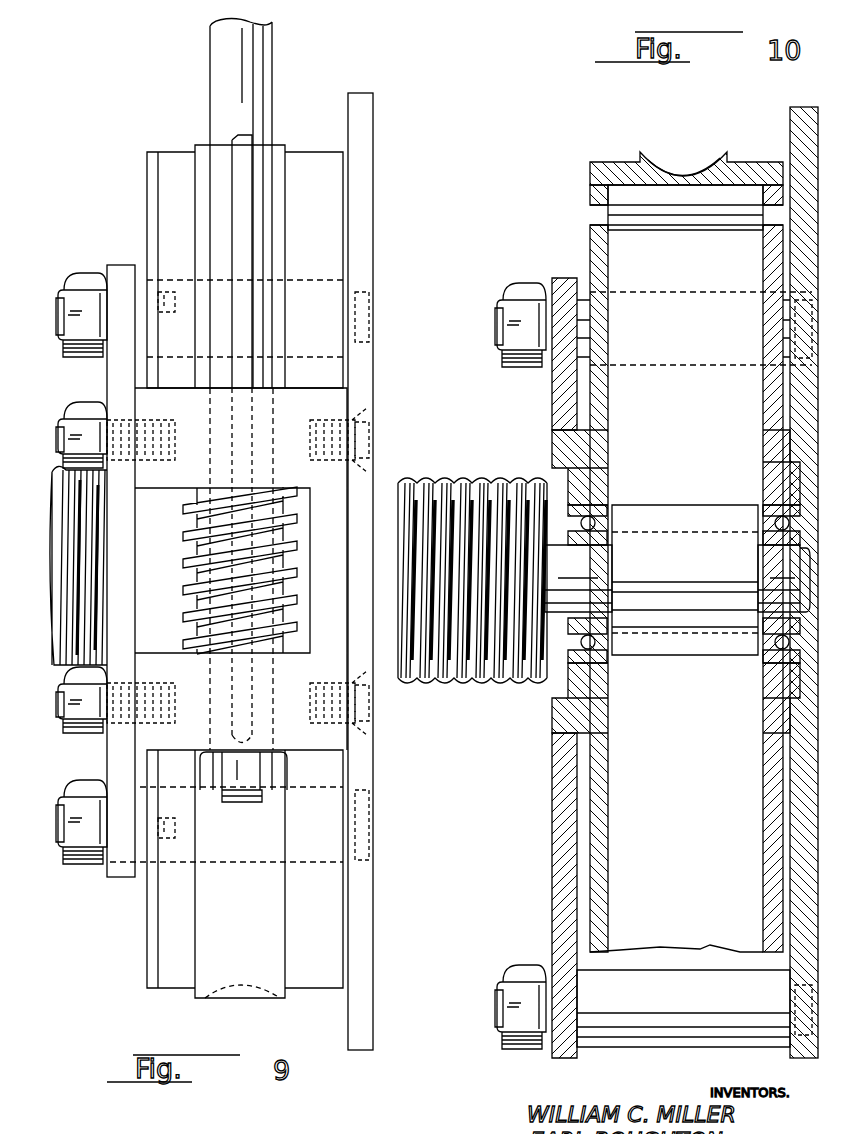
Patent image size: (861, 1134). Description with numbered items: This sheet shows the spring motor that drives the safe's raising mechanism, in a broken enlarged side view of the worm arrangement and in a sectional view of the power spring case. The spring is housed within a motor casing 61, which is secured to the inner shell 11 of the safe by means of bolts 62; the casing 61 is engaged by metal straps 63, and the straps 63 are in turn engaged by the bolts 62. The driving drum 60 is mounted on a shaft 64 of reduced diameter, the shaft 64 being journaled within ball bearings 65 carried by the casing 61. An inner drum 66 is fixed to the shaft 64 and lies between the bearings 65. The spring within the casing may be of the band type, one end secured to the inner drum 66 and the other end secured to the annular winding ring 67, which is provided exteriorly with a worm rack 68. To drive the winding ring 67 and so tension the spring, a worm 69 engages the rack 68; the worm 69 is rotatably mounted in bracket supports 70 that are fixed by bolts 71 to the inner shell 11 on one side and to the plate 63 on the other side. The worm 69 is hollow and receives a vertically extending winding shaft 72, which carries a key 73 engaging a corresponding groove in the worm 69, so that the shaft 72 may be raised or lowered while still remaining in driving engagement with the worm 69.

In FIG. 9, the inner shell 11 is at (365, 888).
In FIG. 10, the inner shell 11 is at (790, 125).
In FIG. 9, the driving drum 60 is at (80, 540).
In FIG. 10, the driving drum 60 is at (394, 500).
In FIG. 10, the motor casing 61 is at (595, 255).
In FIG. 9, the bolts 62 is at (103, 263).
In FIG. 10, the bolts 62 is at (548, 372).
In FIG. 9, the metal straps 63 is at (118, 872).
In FIG. 10, the metal straps 63 is at (552, 770).
In FIG. 10, the shaft 64 is at (610, 515).
In FIG. 10, the ball bearings 65 is at (588, 505).
In FIG. 10, the inner drum 66 is at (640, 657).
In FIG. 10, the annular winding ring 67 is at (620, 170).
In FIG. 9, the worm rack 68 is at (228, 1000).
In FIG. 10, the worm rack 68 is at (658, 158).
In FIG. 9, the worm 69 is at (280, 573).
In FIG. 9, the bracket supports 70 is at (302, 407).
In FIG. 9, the bolts 71 is at (117, 727).
In FIG. 9, the winding shaft 72 is at (265, 55).
In FIG. 9, the key 73 is at (244, 214).